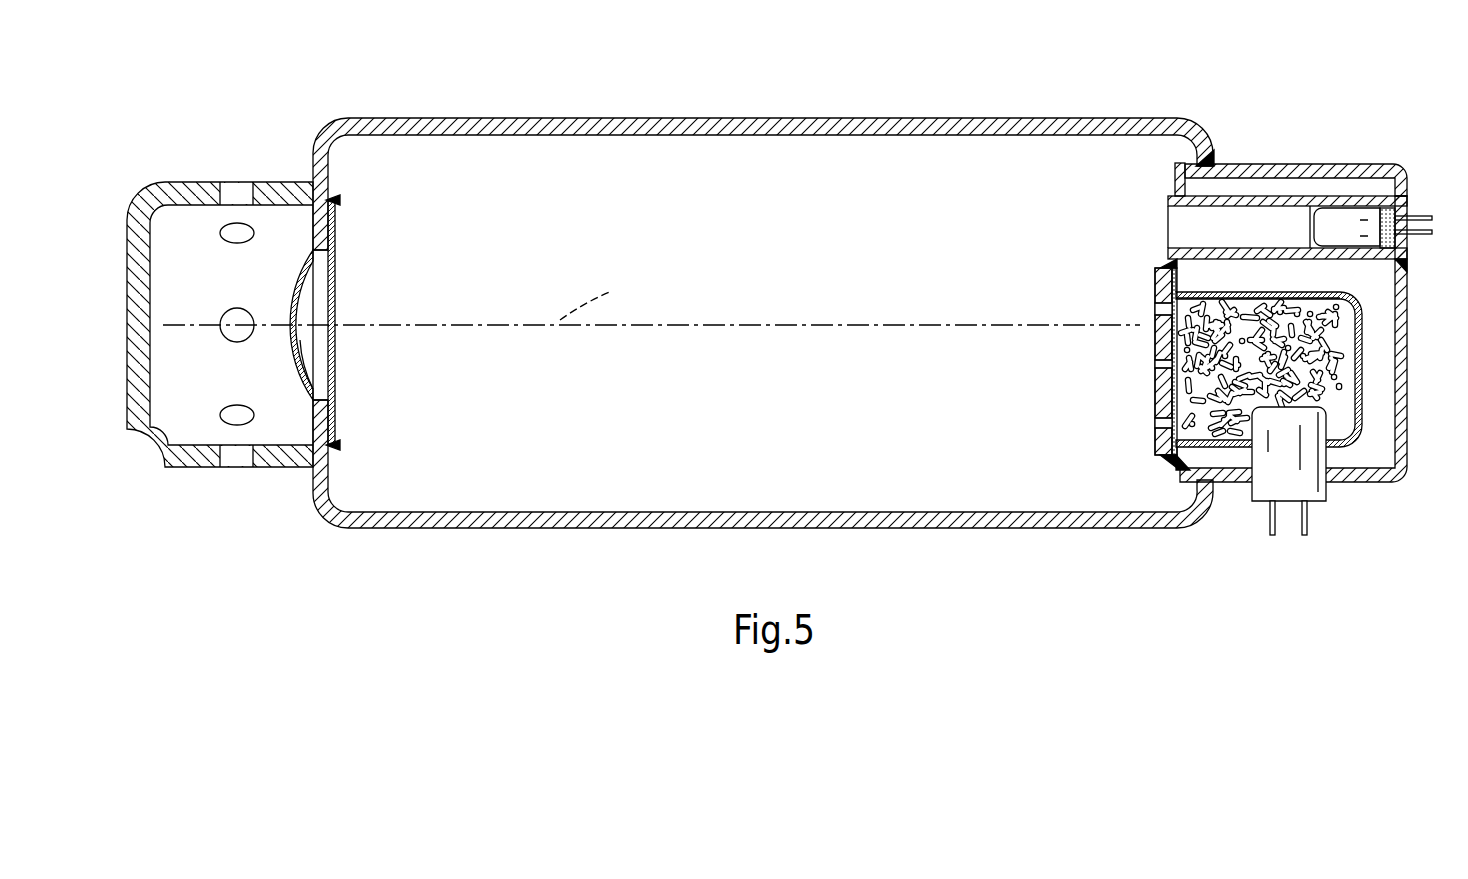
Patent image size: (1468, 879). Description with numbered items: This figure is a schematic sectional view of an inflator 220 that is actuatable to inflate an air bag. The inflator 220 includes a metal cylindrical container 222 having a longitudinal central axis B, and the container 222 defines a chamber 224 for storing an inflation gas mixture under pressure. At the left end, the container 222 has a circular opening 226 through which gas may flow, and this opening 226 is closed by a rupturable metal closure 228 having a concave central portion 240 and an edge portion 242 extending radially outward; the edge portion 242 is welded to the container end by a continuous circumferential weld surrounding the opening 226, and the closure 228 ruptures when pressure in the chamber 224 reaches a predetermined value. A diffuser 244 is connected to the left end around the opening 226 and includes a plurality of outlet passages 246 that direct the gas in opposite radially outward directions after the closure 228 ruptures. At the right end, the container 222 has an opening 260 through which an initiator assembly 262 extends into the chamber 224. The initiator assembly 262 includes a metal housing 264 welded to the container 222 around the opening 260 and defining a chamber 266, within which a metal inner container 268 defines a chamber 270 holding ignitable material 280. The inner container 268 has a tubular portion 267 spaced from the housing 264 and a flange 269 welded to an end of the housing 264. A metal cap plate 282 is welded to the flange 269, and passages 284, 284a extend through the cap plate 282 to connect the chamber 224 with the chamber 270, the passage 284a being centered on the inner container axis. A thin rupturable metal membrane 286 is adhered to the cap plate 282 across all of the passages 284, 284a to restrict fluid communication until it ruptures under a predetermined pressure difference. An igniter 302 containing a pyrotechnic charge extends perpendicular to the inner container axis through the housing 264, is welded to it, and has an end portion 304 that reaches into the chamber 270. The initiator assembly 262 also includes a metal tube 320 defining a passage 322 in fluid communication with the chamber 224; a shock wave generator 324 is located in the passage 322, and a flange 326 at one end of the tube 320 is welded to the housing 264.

The inflator 220 is at (797, 286).
The cylindrical container 222 is at (943, 118).
The chamber 224 is at (975, 192).
The circular opening 226 is at (305, 400).
The rupturable metal closure 228 is at (306, 298).
The concave central portion 240 is at (306, 357).
The edge portion 242 is at (337, 223).
The diffuser 244 is at (220, 283).
The outlet passages 246 is at (228, 238).
The opening 260 is at (1228, 166).
The initiator assembly 262 is at (1358, 165).
The housing 264 is at (1393, 165).
The chamber 266 is at (1325, 284).
The tubular portion 267 is at (1365, 300).
The inner container 268 is at (1316, 353).
The flange 269 is at (1178, 470).
The chamber 270 is at (1348, 377).
The ignitable material 280 is at (1103, 344).
The cap plate 282 is at (1158, 275).
The passages 284 is at (1158, 308).
The central passage 284a is at (1160, 372).
The rupturable metal membrane 286 is at (1163, 400).
The igniter 302 is at (1356, 479).
The end portion 304 is at (1318, 420).
The tube 320 is at (1278, 198).
The passage 322 is at (1216, 249).
The shock wave generator 324 is at (1355, 224).
The flange 326 is at (1407, 262).